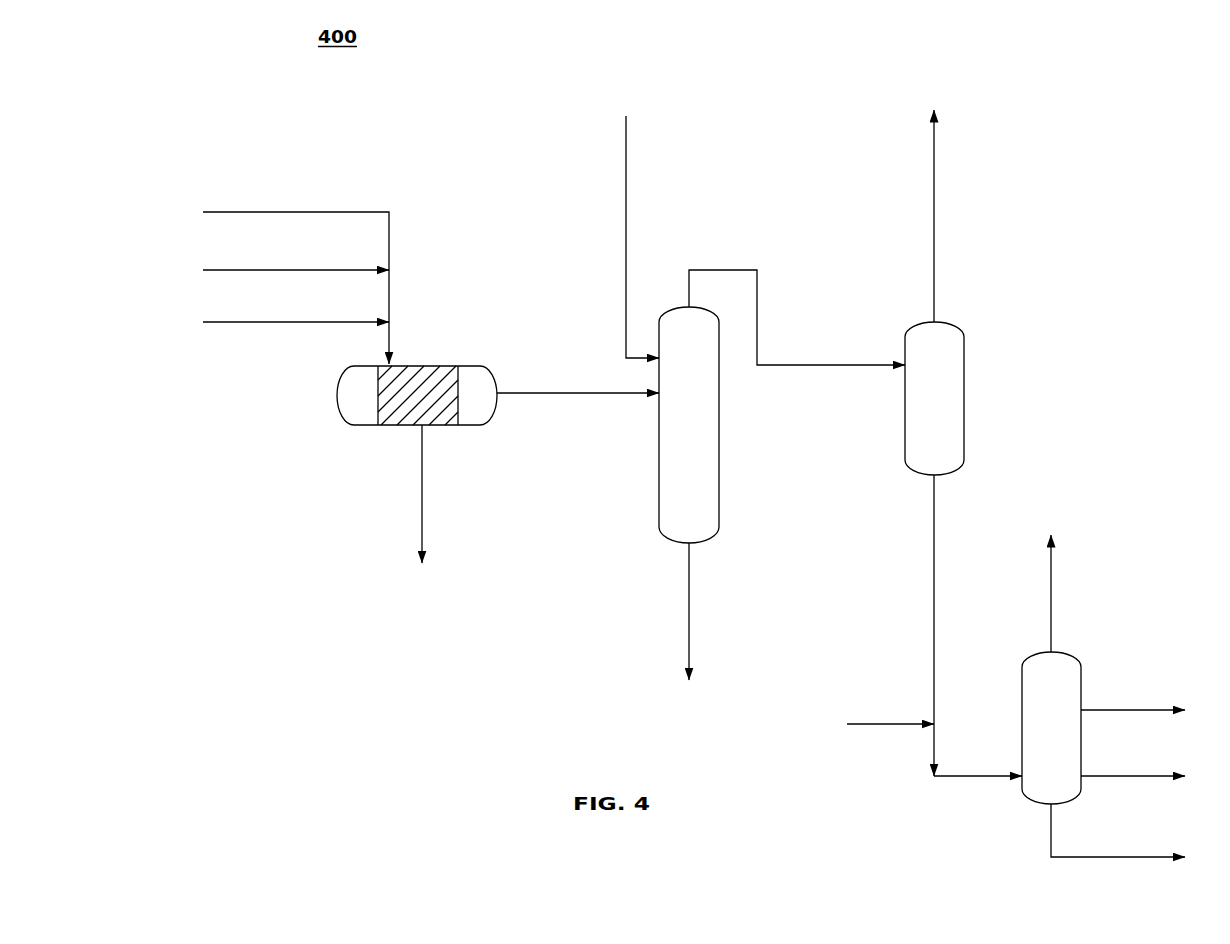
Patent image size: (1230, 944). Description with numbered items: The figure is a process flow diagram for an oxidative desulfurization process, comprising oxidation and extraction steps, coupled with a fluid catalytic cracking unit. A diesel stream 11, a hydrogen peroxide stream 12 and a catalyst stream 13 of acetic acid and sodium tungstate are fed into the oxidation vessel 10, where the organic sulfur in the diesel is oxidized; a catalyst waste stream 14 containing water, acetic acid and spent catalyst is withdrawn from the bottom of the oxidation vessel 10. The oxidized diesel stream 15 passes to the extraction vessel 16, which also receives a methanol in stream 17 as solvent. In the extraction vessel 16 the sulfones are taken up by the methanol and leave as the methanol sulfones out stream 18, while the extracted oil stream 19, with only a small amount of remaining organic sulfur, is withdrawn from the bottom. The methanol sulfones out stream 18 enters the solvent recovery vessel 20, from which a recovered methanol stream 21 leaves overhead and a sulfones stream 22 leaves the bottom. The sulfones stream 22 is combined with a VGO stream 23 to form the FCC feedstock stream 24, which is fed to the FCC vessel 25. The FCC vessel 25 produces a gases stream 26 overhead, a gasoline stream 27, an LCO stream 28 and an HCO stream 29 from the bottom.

The oxidation vessel 10 is at (440, 366).
The diesel stream 11 is at (247, 212).
The hydrogen peroxide stream 12 is at (247, 270).
The catalyst stream 13 is at (247, 322).
The catalyst waste stream 14 is at (422, 505).
The oxidized diesel stream 15 is at (544, 393).
The extraction vessel 16 is at (719, 484).
The methanol in stream 17 is at (626, 212).
The methanol sulfones out stream 18 is at (810, 365).
The extracted oil stream 19 is at (689, 563).
The solvent recovery vessel 20 is at (922, 322).
The methanol stream 21 is at (934, 197).
The sulfones stream 22 is at (934, 652).
The VGO stream 23 is at (890, 724).
The FCC feedstock stream 24 is at (993, 776).
The FCC vessel 25 is at (1022, 748).
The gases stream 26 is at (1051, 620).
The gasoline stream 27 is at (1117, 710).
The LCO stream 28 is at (1120, 776).
The HCO stream 29 is at (1120, 857).